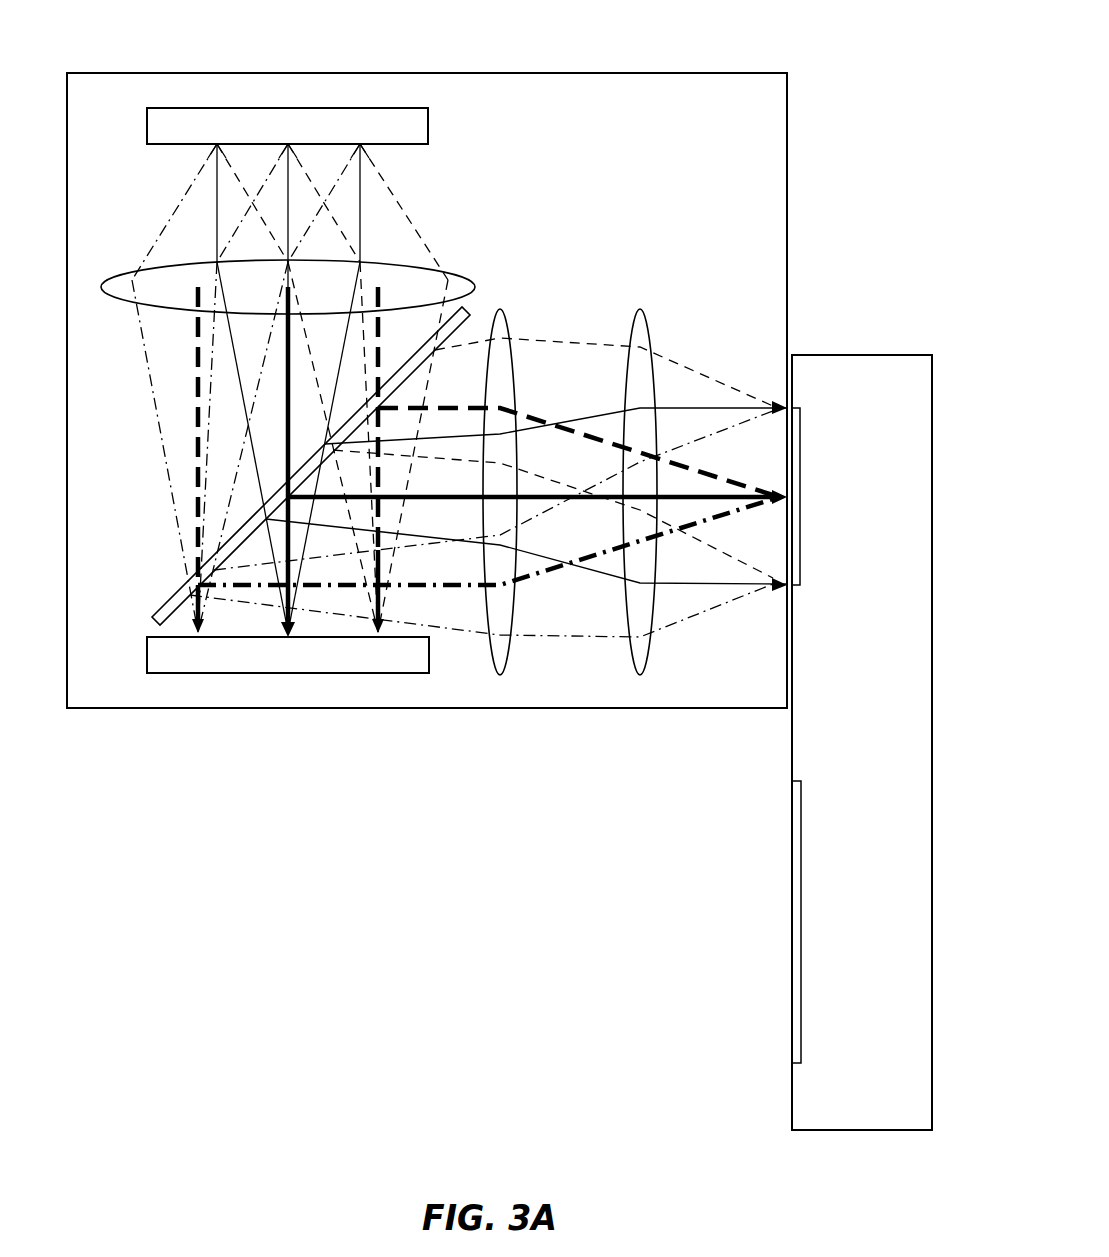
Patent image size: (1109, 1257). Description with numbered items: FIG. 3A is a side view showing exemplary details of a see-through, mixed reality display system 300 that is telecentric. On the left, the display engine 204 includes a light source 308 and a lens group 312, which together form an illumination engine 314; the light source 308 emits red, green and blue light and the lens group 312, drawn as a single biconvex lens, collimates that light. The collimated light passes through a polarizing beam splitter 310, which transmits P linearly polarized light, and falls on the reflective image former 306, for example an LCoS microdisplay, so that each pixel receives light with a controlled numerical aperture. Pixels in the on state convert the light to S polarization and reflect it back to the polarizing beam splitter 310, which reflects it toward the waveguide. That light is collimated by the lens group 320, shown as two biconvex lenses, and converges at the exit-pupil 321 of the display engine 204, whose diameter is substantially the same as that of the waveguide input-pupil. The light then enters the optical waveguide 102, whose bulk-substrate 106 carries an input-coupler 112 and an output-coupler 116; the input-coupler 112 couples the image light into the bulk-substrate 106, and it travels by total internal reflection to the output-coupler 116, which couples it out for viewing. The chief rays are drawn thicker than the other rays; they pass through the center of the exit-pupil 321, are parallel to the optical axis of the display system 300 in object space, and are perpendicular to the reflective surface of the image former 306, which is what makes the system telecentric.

The display system 300 is at (360, 30).
The display engine 204 is at (757, 73).
The light source 308 is at (147, 117).
The lens group 312 is at (455, 262).
The illumination engine 314 is at (492, 107).
The polarizing beam splitter 310 is at (167, 602).
The image former 306 is at (147, 647).
The lens group 320 is at (640, 673).
The exit-pupil 321 is at (782, 404).
The optical waveguide 102 is at (888, 328).
The bulk-substrate 106 is at (885, 701).
The input-coupler 112 is at (800, 445).
The output-coupler 116 is at (789, 927).